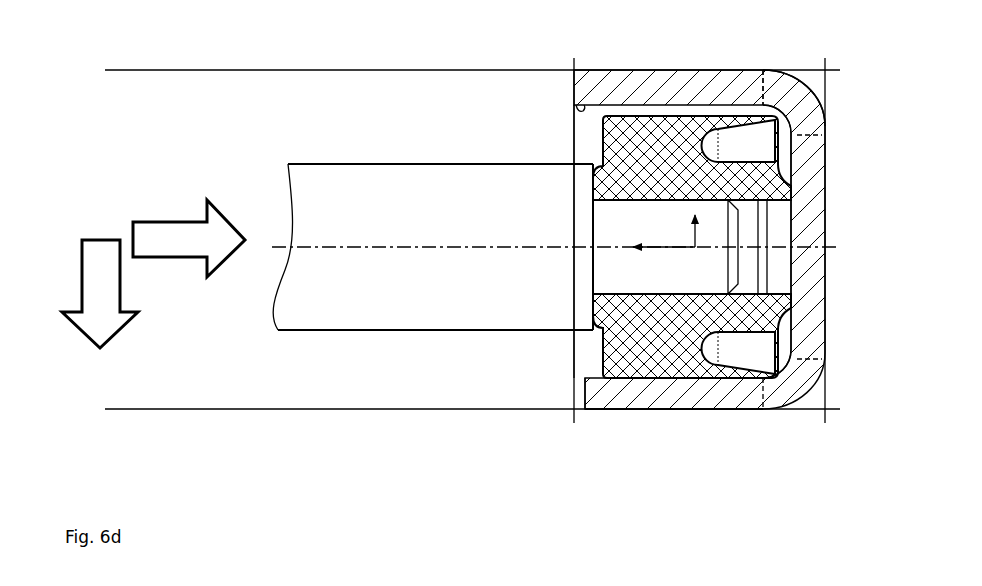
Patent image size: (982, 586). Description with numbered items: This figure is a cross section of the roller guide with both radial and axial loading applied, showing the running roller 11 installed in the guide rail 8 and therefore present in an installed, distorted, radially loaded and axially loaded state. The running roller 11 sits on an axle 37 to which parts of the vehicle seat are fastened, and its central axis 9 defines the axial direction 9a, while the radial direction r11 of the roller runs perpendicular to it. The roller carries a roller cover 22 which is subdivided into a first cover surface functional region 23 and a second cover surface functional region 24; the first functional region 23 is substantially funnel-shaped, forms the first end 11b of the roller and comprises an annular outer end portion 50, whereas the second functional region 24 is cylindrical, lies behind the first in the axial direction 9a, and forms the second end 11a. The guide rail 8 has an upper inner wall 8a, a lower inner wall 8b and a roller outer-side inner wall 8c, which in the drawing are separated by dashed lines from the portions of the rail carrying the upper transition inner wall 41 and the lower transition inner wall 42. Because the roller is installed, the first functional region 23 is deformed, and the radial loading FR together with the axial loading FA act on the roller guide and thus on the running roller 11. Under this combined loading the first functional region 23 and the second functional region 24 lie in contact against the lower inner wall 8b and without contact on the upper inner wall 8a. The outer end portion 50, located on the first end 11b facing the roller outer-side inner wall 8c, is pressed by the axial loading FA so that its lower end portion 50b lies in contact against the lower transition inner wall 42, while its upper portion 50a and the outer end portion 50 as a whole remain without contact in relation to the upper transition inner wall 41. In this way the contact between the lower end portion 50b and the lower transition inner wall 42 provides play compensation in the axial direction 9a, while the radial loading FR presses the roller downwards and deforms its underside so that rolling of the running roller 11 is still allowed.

The guide rail 8 is at (642, 66).
The upper inner wall 8a is at (573, 111).
The lower inner wall 8b is at (583, 377).
The roller outer-side inner wall 8c is at (792, 176).
The central axis 9 is at (425, 249).
The axial direction 9a is at (658, 249).
The running roller 11 is at (559, 371).
The second end 11a is at (570, 147).
The first end 11b is at (798, 70).
The roller cover 22 is at (652, 467).
The first cover surface functional region 23 is at (705, 429).
The second cover surface functional region 24 is at (612, 429).
The axle 37 is at (367, 180).
The upper transition inner wall 41 is at (796, 134).
The lower transition inner wall 42 is at (792, 352).
The outer end portion 50 is at (762, 66).
The upper portion of the outer end portion 50a is at (781, 112).
The lower end portion 50b is at (780, 380).
The radial direction r11 is at (694, 246).
The radial loading FR is at (95, 245).
The axial loading FA is at (167, 230).